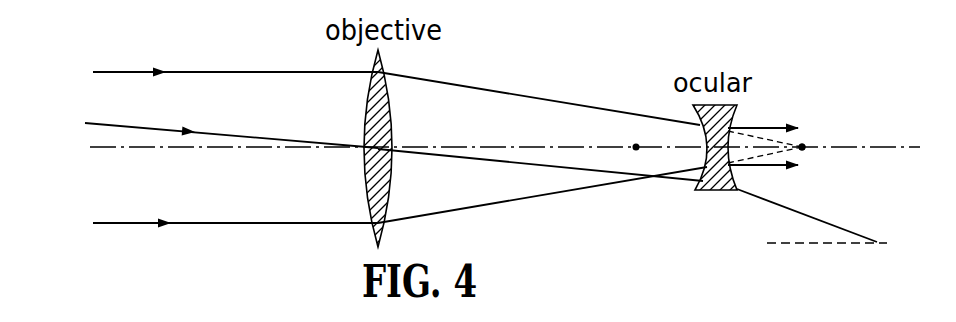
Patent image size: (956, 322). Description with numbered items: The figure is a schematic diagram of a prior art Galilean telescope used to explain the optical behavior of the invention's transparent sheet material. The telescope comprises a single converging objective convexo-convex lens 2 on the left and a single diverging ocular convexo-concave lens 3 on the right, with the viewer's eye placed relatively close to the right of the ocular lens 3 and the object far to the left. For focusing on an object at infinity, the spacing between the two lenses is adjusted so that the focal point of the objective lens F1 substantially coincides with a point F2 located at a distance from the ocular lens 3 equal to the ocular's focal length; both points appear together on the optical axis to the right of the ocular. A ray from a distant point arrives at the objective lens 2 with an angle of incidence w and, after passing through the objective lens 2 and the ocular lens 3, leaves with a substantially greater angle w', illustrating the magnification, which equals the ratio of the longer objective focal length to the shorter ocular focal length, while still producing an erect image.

The objective convexo-convex lens 2 is at (392, 114).
The ocular convexo-concave lens 3 is at (738, 113).
The angle of incidence w is at (231, 151).
The exit angle w' is at (812, 218).
The focal point of the objective lens F1 is at (816, 129).
The focal point of the ocular lens F2 is at (830, 129).